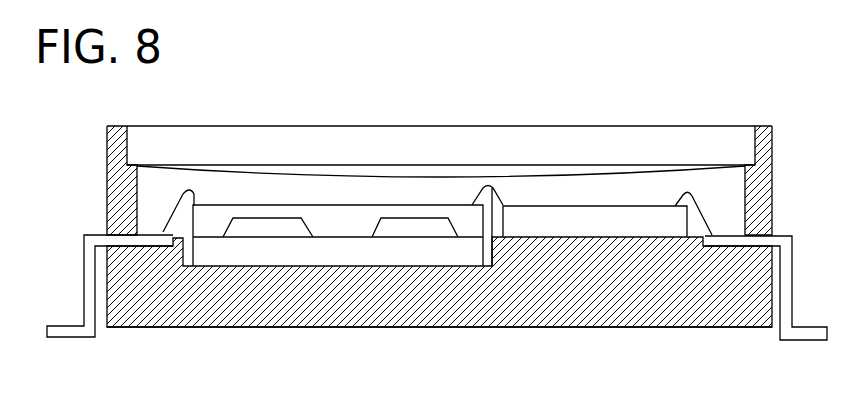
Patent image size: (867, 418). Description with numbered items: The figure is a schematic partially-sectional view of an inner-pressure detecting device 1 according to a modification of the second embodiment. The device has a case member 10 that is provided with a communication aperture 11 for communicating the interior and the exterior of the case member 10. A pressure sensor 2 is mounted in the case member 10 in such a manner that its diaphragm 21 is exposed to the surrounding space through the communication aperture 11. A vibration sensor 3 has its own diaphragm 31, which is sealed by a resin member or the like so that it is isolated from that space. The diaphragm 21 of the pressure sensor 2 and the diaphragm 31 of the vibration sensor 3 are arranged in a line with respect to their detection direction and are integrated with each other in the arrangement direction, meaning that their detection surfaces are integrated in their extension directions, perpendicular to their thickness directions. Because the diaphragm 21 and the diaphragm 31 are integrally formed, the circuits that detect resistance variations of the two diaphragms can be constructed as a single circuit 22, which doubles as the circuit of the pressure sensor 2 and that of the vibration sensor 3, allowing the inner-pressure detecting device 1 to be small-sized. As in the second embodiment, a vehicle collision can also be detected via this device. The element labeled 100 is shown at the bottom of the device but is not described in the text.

The inner-pressure detecting device 1 is at (551, 62).
The pressure sensor 2 is at (206, 120).
The vibration sensor 3 is at (364, 120).
The case member 10 is at (757, 196).
The communication aperture 11 is at (503, 140).
The diaphragm 21 is at (261, 212).
The circuit 22 is at (604, 220).
The diaphragm 31 is at (415, 212).
The mounting surface 100 is at (485, 328).